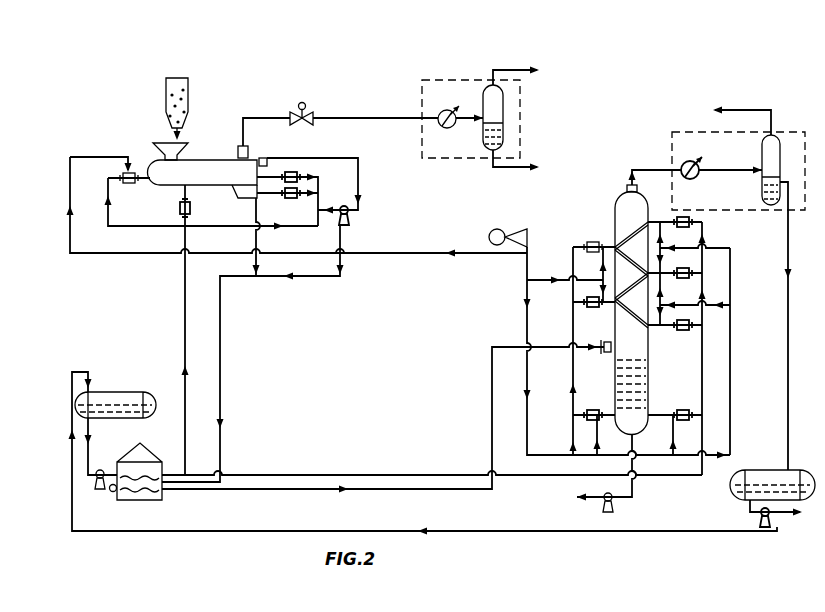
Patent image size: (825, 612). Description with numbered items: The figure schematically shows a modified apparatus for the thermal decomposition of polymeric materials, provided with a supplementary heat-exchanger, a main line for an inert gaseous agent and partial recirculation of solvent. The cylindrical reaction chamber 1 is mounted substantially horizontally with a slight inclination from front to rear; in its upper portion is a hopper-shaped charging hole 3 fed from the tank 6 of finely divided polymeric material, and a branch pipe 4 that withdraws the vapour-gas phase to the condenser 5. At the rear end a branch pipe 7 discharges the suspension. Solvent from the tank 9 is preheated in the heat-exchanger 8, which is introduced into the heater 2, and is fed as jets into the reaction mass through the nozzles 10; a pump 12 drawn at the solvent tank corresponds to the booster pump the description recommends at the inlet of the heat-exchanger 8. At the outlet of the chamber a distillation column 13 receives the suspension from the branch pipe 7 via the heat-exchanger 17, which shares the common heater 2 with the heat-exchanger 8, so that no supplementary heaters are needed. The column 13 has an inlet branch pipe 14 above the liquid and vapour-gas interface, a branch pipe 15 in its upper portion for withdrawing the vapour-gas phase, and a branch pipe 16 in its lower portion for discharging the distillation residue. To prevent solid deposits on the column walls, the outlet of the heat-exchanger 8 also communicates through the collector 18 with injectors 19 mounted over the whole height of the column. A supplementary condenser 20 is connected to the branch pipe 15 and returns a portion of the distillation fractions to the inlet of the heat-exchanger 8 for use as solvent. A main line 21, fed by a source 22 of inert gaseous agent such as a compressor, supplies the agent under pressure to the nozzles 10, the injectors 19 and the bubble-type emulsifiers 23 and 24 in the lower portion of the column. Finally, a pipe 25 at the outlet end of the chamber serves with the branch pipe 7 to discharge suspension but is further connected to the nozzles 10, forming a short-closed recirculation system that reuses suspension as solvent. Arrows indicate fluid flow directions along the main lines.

The reaction chamber 1 is at (150, 158).
The heater 2 is at (151, 452).
The charging hole 3 is at (160, 142).
The branch pipe 4 is at (250, 152).
The condenser 5 is at (524, 122).
The tank 6 is at (166, 97).
The branch pipe 7 is at (248, 197).
The heat-exchanger 8 is at (130, 475).
The tank 9 is at (122, 392).
The nozzles 10 is at (146, 181).
The pump 12 is at (101, 491).
The distillation column 13 is at (614, 224).
The inlet branch pipe 14 is at (606, 353).
The branch pipe 15 is at (627, 184).
The branch pipe 16 is at (634, 488).
The heat-exchanger 17 is at (144, 496).
The collector 18 is at (573, 265).
The injectors 19 is at (592, 240).
The supplementary condenser 20 is at (801, 128).
The main line 21 is at (389, 250).
The source 22 is at (500, 230).
The bubble-type emulsifier 23 is at (612, 437).
The bubble-type emulsifier 24 is at (652, 438).
The pipe 25 is at (268, 156).